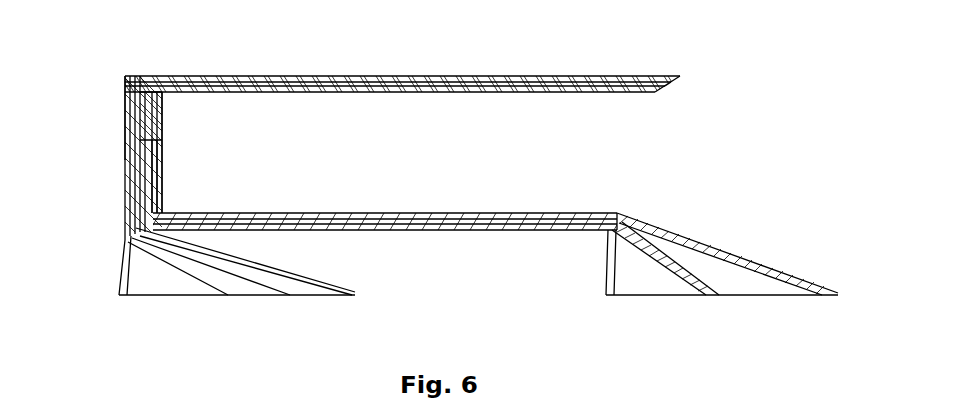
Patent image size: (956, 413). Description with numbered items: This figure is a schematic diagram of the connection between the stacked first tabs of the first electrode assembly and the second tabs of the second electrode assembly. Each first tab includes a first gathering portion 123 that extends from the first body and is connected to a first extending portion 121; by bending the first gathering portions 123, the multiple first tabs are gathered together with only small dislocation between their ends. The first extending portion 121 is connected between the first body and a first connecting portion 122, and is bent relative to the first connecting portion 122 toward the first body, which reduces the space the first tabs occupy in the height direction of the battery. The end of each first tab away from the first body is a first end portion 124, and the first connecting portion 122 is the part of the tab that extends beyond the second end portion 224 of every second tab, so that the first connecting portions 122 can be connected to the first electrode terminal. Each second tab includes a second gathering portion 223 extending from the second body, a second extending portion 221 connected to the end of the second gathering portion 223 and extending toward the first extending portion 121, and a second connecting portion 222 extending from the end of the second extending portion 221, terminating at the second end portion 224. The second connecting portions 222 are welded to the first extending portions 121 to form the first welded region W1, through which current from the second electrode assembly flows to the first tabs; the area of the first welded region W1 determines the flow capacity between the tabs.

The first connecting portion 122 is at (262, 72).
The first end portion 124 is at (682, 81).
The first extending portion 121 is at (125, 210).
The first welded region W1 is at (125, 152).
The second end portion 224 is at (152, 112).
The second connecting portion 222 is at (158, 202).
The second extending portion 221 is at (428, 213).
The second gathering portion 223 is at (608, 273).
The first gathering portion 123 is at (121, 271).